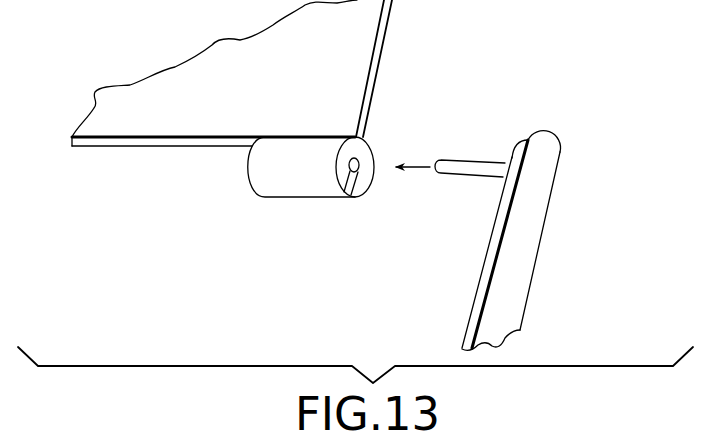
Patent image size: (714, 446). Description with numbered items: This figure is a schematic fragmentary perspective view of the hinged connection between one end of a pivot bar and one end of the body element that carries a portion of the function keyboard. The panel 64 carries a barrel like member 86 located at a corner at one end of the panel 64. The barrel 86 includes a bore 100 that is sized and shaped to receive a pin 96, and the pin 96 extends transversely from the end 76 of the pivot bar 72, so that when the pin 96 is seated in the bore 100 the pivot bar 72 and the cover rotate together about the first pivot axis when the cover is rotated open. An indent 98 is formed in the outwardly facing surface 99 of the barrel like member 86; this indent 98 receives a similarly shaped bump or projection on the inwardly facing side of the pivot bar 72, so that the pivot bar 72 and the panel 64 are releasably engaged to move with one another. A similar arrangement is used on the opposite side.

The barrel like member 86 is at (282, 147).
The panel 64 is at (402, 13).
The outwardly facing surface 99 is at (366, 169).
The bore 100 is at (360, 164).
The indent 98 is at (342, 178).
The pin 96 is at (465, 192).
The pivot bar 72 is at (545, 277).
The end of the pivot bar 76 is at (575, 143).